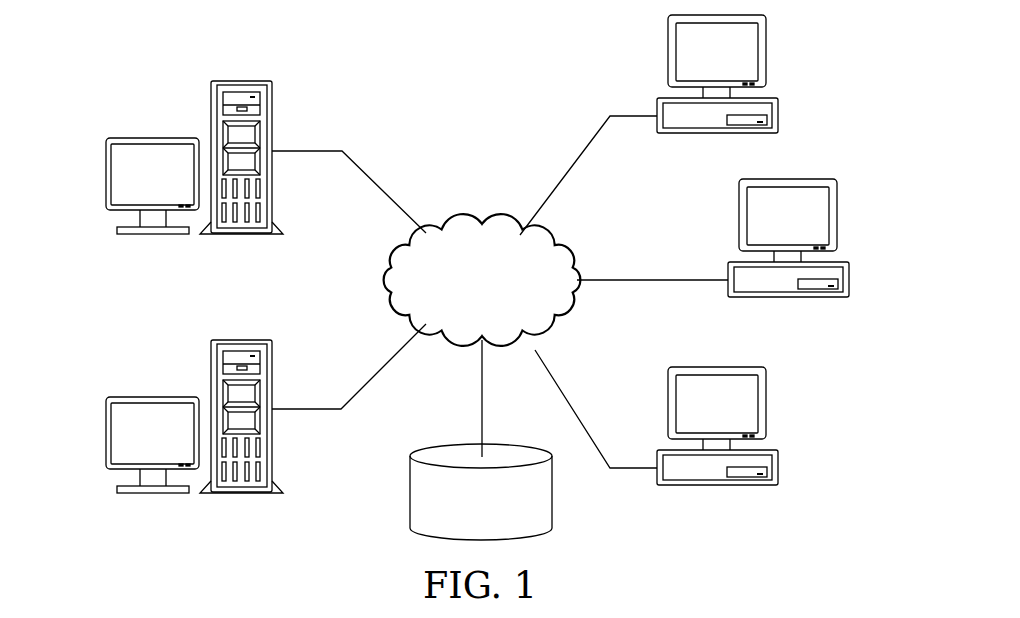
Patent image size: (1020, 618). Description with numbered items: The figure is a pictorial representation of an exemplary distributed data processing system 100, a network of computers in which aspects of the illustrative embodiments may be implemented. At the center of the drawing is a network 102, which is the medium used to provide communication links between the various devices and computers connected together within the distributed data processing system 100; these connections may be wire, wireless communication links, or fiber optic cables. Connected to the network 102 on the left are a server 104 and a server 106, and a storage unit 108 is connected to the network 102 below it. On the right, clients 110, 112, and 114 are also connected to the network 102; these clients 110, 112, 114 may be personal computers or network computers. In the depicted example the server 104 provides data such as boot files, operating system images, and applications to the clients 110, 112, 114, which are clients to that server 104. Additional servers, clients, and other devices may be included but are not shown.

The distributed data processing system 100 is at (344, 75).
The network 102 is at (456, 225).
The server 104 is at (106, 176).
The server 106 is at (106, 434).
The storage unit 108 is at (410, 490).
The client 110 is at (778, 107).
The client 112 is at (847, 291).
The client 114 is at (778, 478).